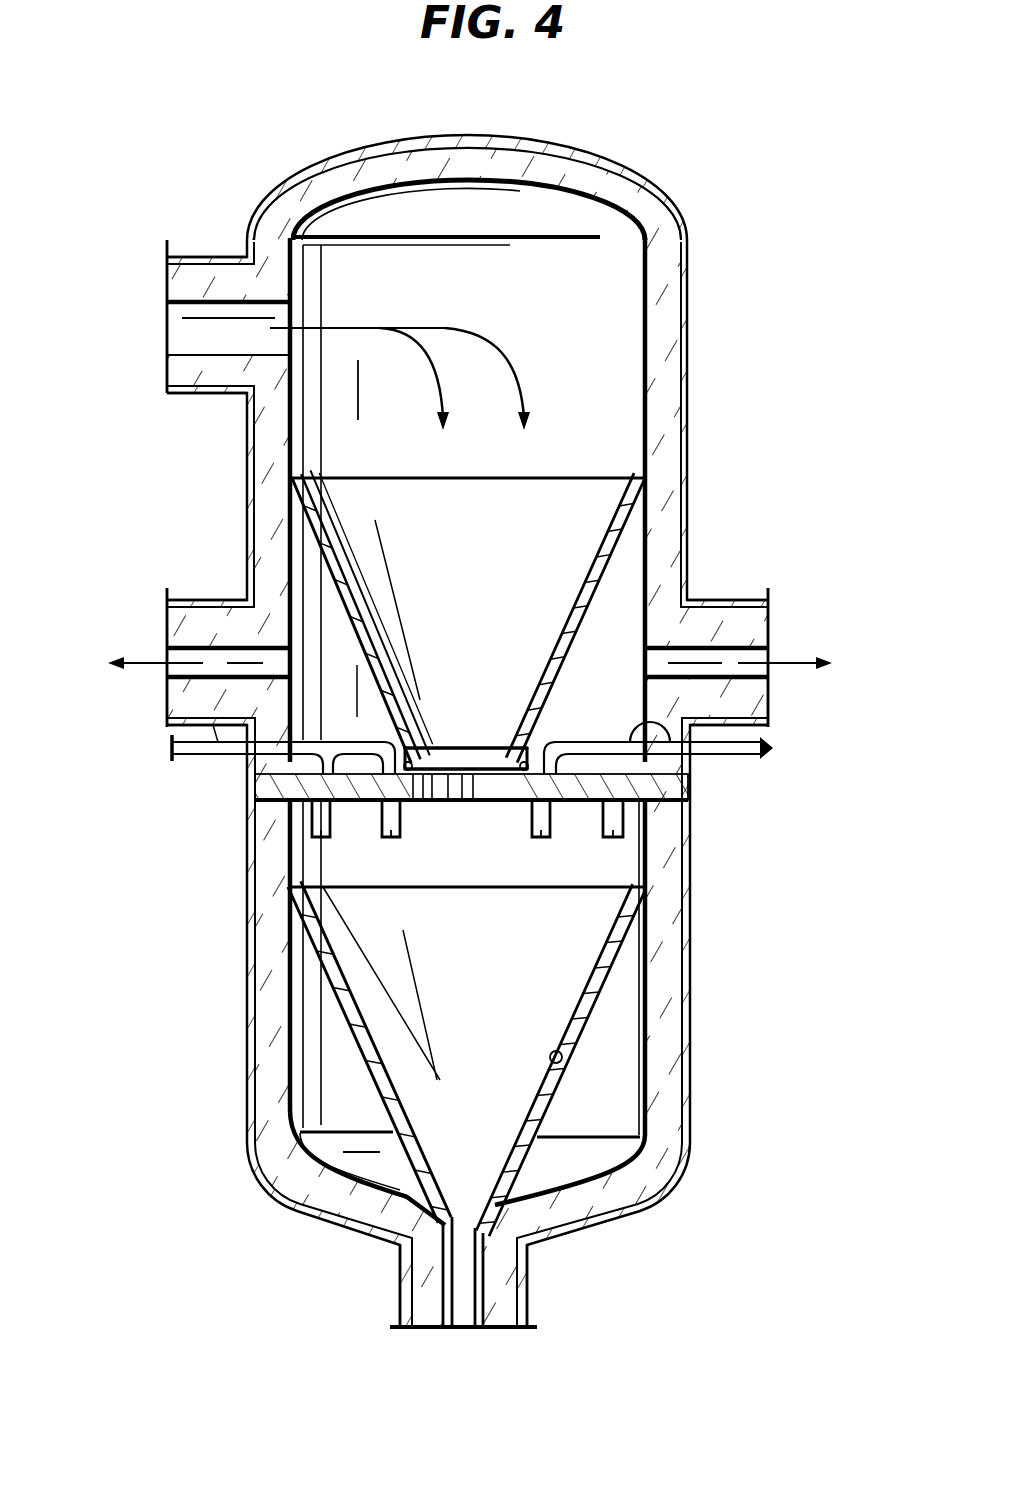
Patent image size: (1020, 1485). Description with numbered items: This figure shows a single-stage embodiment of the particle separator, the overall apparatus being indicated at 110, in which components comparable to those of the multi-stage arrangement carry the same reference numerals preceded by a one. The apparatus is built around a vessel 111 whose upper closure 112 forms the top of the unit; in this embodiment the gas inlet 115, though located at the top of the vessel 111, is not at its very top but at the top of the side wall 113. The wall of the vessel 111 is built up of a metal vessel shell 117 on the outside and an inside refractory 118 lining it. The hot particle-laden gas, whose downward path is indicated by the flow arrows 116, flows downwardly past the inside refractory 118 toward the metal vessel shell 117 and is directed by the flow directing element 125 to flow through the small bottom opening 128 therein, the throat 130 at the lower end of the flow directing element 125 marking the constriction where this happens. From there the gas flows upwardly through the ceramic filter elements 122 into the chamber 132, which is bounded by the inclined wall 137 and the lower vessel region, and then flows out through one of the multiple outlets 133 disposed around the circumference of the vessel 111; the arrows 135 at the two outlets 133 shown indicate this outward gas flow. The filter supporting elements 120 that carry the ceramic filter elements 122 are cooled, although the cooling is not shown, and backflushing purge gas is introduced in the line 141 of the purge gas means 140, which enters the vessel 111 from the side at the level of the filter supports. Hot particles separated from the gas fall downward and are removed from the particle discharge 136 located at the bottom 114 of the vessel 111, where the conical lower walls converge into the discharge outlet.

The separator apparatus 110 is at (256, 132).
The vessel 111 is at (735, 190).
The upper head 112 is at (566, 142).
The side wall 113 is at (693, 503).
The bottom 114 is at (610, 1228).
The inlet nozzle 115 is at (210, 318).
The gas flow 116 is at (503, 362).
The metal vessel shell 117 is at (693, 310).
The inside refractory 118 is at (670, 372).
The filter supporting elements 120 is at (350, 800).
The ceramic filter elements 122 is at (608, 835).
The flow directing element 125 is at (372, 578).
The small bottom opening 128 is at (466, 810).
The throat ring 130 is at (507, 757).
The chamber 132 is at (613, 640).
The outlets 133 is at (220, 647).
The outlet flow 135 is at (145, 670).
The particle discharge 136 is at (480, 1338).
The lower conical wall 137 is at (560, 1062).
The purge gas means 140 is at (232, 768).
The line 141 is at (690, 792).